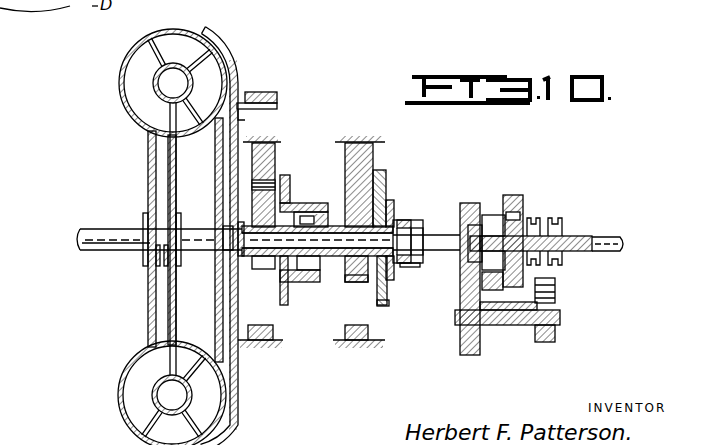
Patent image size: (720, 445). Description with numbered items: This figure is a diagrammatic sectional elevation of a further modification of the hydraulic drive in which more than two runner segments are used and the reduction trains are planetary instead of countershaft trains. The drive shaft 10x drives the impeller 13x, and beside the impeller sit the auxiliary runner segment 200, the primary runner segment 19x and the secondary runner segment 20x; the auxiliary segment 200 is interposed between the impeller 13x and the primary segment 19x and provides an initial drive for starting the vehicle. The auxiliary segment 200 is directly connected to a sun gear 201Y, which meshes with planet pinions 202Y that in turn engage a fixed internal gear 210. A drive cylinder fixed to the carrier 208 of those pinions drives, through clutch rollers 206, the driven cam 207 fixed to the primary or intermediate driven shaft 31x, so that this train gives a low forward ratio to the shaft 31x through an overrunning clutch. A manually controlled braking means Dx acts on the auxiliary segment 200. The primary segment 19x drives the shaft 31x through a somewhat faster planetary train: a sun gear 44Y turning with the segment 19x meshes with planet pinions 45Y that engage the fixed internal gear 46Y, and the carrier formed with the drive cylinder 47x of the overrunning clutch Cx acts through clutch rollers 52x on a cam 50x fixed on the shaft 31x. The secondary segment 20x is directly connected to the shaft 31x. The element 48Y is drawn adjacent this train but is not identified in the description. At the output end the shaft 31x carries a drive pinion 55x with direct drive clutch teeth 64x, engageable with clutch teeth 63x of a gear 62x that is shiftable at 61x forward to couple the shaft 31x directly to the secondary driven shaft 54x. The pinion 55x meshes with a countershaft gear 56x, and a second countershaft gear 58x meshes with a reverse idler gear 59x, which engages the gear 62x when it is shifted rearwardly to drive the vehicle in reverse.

The drive shaft 10x is at (115, 252).
The auxiliary runner segment 200 is at (176, 46).
The impeller 13x is at (138, 71).
The primary runner segment 19x is at (215, 73).
The secondary runner segment 20x is at (181, 119).
The primary or intermediate driven shaft 31x is at (198, 252).
The manually controlled braking means Dx is at (270, 93).
The fixed internal gear 210 is at (262, 138).
The planet pinions 202Y is at (274, 150).
The sun gear 201Y is at (255, 268).
The carrier 208 is at (283, 178).
The clutch rollers 206 is at (298, 210).
The gear 48Y is at (370, 146).
The driven cam 207 is at (332, 276).
The sun gear 44Y is at (368, 283).
The planet pinions 45Y is at (380, 172).
The fixed internal gear 46Y is at (389, 200).
The overrunning clutch Cx is at (385, 302).
The clutch rollers 52x is at (400, 220).
The drive cylinder 47x is at (415, 219).
The cam 50x is at (412, 267).
The countershaft gear 56x is at (472, 355).
The second countershaft gear 58x is at (556, 335).
The reverse idler gear 59x is at (558, 285).
The drive pinion 55x is at (490, 215).
The direct drive clutch teeth 64x is at (518, 201).
The gear 62x is at (536, 218).
The clutch teeth 63x is at (557, 219).
The shift point 61x is at (584, 237).
The secondary driven shaft 54x is at (620, 240).